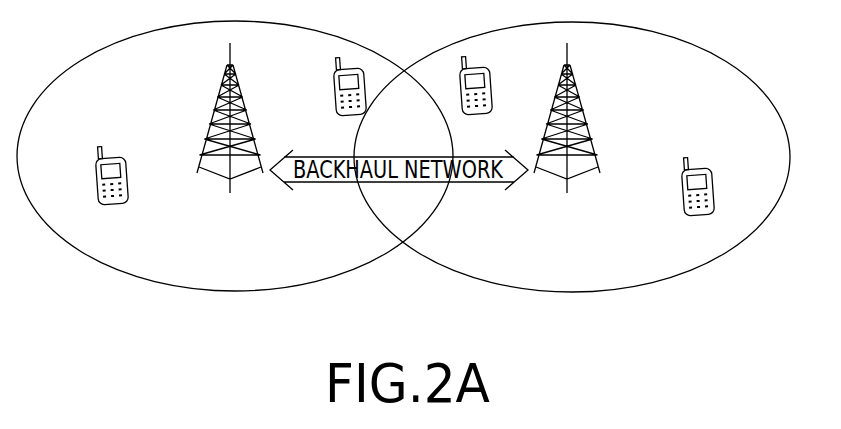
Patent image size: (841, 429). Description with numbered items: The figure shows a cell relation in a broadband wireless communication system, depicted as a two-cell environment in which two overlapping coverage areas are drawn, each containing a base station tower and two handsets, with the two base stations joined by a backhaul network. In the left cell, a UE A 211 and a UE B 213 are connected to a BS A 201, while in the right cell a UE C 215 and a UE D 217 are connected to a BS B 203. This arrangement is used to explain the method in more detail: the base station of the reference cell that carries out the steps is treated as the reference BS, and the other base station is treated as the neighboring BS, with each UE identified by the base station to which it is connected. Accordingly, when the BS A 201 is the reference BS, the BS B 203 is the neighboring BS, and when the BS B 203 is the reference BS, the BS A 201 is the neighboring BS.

The BS A 201 is at (230, 146).
The BS B 203 is at (567, 146).
The UE A 211 is at (112, 192).
The UE B 213 is at (350, 102).
The UE C 215 is at (476, 101).
The UE D 217 is at (696, 203).